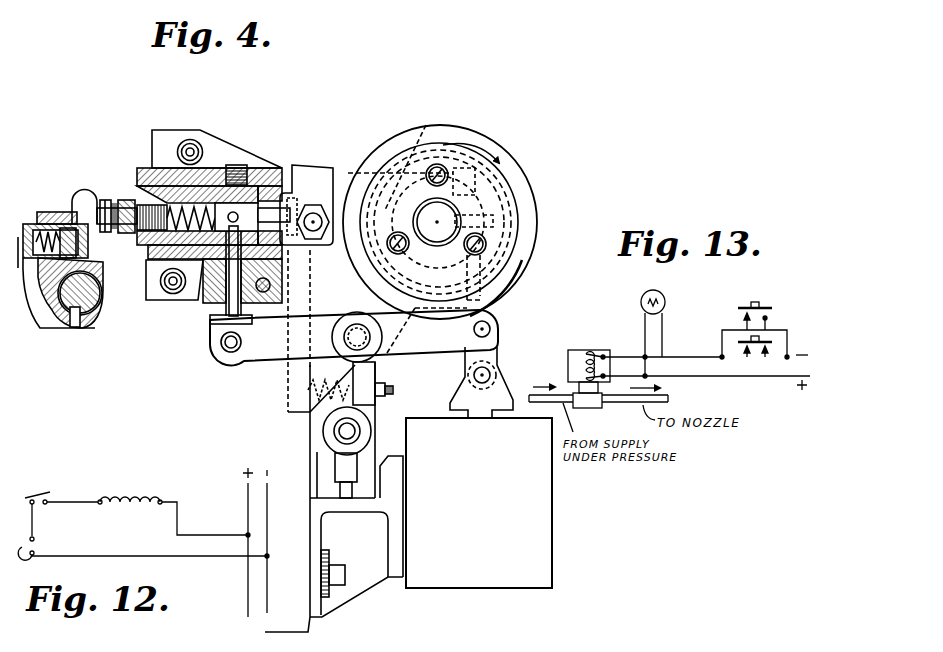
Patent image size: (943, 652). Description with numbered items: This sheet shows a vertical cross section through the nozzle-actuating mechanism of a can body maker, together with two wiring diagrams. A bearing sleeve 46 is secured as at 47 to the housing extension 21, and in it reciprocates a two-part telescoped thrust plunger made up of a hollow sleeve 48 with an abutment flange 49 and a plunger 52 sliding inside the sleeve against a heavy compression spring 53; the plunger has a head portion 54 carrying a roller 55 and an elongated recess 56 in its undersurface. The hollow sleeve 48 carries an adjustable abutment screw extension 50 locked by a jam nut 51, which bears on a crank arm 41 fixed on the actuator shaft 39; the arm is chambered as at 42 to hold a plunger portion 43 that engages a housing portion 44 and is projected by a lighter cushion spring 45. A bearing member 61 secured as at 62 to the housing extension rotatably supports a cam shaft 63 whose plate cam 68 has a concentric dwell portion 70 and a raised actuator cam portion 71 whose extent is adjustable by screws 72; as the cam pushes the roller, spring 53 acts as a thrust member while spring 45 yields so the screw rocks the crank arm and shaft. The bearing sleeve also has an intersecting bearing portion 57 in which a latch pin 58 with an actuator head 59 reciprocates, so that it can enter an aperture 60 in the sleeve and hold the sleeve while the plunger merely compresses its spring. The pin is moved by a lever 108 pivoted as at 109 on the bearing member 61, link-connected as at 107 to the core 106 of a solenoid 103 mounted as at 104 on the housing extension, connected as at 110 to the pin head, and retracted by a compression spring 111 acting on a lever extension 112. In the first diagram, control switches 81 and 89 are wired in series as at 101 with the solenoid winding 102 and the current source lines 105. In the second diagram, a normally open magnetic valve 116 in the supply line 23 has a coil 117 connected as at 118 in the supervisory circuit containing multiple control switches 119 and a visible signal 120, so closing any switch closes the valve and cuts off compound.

In FIG. 4, the housing extension 21 is at (203, 323).
In FIG. 13, the supply line 23 is at (538, 400).
In FIG. 4, the actuator shaft 39 is at (88, 305).
In FIG. 4, the crank arm 41 is at (85, 188).
In FIG. 4, the chamber 42 is at (56, 211).
In FIG. 4, the plunger portion 43 is at (44, 222).
In FIG. 4, the housing portion 44 is at (66, 324).
In FIG. 4, the cushion spring 45 is at (140, 226).
In FIG. 4, the bearing sleeve 46 is at (256, 168).
In FIG. 4, the securing means 47 is at (197, 146).
In FIG. 4, the hollow sleeve 48 is at (150, 278).
In FIG. 4, the abutment flange 49 is at (147, 243).
In FIG. 4, the abutment screw extension 50 is at (104, 200).
In FIG. 4, the jam nut 51 is at (127, 200).
In FIG. 4, the plunger 52 is at (268, 168).
In FIG. 4, the compression spring 53 is at (203, 168).
In FIG. 4, the head portion 54 is at (295, 190).
In FIG. 4, the roller 55 is at (335, 178).
In FIG. 4, the elongated recess 56 is at (252, 217).
In FIG. 4, the bearing portion 57 is at (224, 306).
In FIG. 4, the latch pin 58 is at (220, 346).
In FIG. 4, the actuator head 59 is at (244, 360).
In FIG. 4, the aperture 60 is at (212, 272).
In FIG. 4, the bearing member 61 is at (420, 138).
In FIG. 4, the securing means 62 is at (293, 375).
In FIG. 4, the cam shaft 63 is at (440, 205).
In FIG. 4, the cam plate 68 is at (500, 178).
In FIG. 4, the dwell portion 70 is at (389, 136).
In FIG. 4, the actuator cam portion 71 is at (538, 222).
In FIG. 4, the screws 72 is at (390, 231).
In FIG. 12, the control switch 81 is at (35, 557).
In FIG. 12, the control switch 89 is at (38, 495).
In FIG. 12, the series connection 101 is at (178, 520).
In FIG. 12, the solenoid winding 102 is at (141, 496).
In FIG. 4, the solenoid 103 is at (467, 581).
In FIG. 4, the mounting 104 is at (398, 530).
In FIG. 4, the current source lines 105 is at (249, 522).
In FIG. 4, the solenoid core 106 is at (482, 415).
In FIG. 4, the link connection 107 is at (498, 346).
In FIG. 4, the lever 108 is at (428, 340).
In FIG. 4, the pivot 109 is at (345, 336).
In FIG. 4, the connection 110 is at (244, 342).
In FIG. 4, the compression spring 111 is at (333, 400).
In FIG. 4, the lever extension 112 is at (325, 420).
In FIG. 13, the magnetic valve 116 is at (577, 382).
In FIG. 13, the valve coil 117 is at (577, 350).
In FIG. 13, the circuit connection 118 is at (624, 375).
In FIG. 13, the control switches 119 is at (772, 335).
In FIG. 13, the visible signal 120 is at (665, 303).